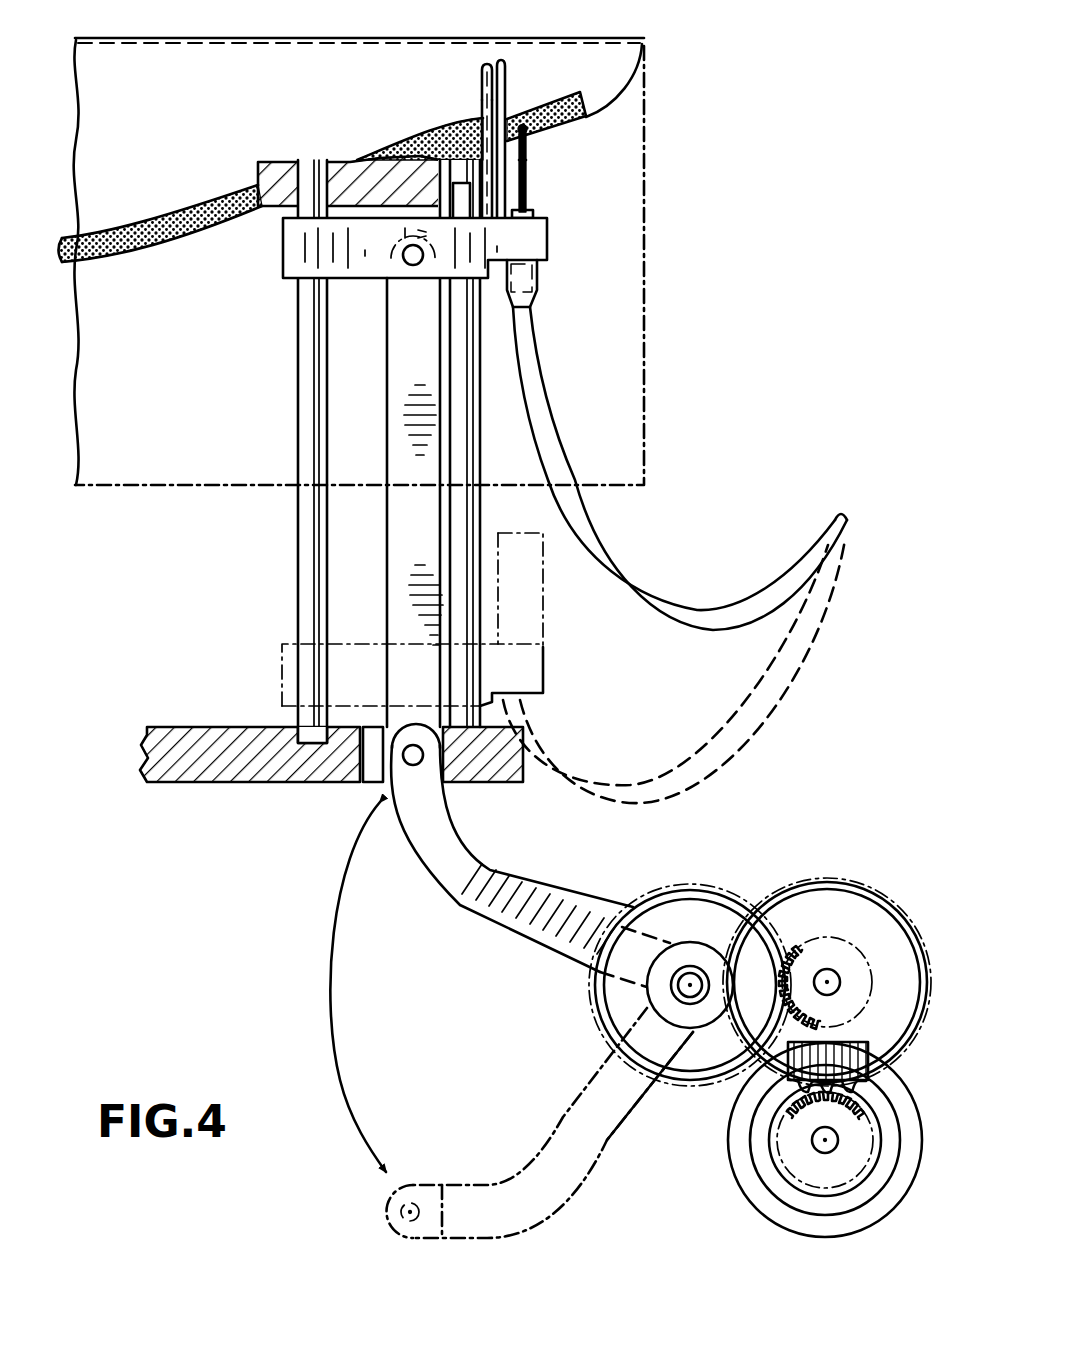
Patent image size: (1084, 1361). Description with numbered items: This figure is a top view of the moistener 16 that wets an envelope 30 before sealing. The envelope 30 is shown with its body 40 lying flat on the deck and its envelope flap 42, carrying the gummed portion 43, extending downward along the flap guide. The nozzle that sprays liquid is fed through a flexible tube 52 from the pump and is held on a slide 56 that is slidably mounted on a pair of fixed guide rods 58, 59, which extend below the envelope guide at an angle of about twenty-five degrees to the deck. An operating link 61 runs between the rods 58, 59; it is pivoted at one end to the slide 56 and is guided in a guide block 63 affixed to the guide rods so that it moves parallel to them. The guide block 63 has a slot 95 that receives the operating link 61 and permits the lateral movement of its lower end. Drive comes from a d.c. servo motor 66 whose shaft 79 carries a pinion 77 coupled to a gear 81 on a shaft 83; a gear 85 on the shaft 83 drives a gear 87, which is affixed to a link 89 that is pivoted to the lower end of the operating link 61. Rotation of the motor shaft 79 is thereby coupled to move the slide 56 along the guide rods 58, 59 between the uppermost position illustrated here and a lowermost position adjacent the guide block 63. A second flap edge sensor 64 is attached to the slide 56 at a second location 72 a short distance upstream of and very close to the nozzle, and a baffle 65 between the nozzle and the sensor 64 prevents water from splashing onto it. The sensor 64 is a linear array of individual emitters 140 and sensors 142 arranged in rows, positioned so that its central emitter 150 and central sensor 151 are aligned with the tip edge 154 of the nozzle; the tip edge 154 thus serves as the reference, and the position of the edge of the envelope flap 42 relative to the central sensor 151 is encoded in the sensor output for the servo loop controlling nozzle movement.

The moistener 16 is at (248, 846).
The envelope 30 is at (668, 347).
The body of the envelope 40 is at (646, 309).
The envelope flap 42 is at (191, 132).
The gummed portion 43 is at (163, 228).
The flexible tube 52 is at (630, 572).
The slide 56 is at (283, 256).
The guide rod 58 is at (308, 575).
The guide rod 59 is at (482, 418).
The operating link 61 is at (398, 372).
The guide block 63 is at (210, 726).
The second flap edge sensor 64 is at (462, 109).
The baffle 65 is at (580, 124).
The d.c. servo motor 66 is at (760, 1215).
The second location 72 is at (482, 67).
The pinion 77 is at (808, 1108).
The shaft 79 is at (824, 1153).
The gear 81 is at (785, 1072).
The shaft 83 is at (840, 962).
The gear 85 is at (830, 945).
The gear 87 is at (768, 988).
The link 89 is at (543, 915).
The slot 95 is at (373, 782).
The emitters 140 is at (481, 74).
The sensors 142 is at (503, 75).
The central emitter 150 is at (446, 124).
The central sensor 151 is at (524, 160).
The tip edge 154 is at (530, 125).